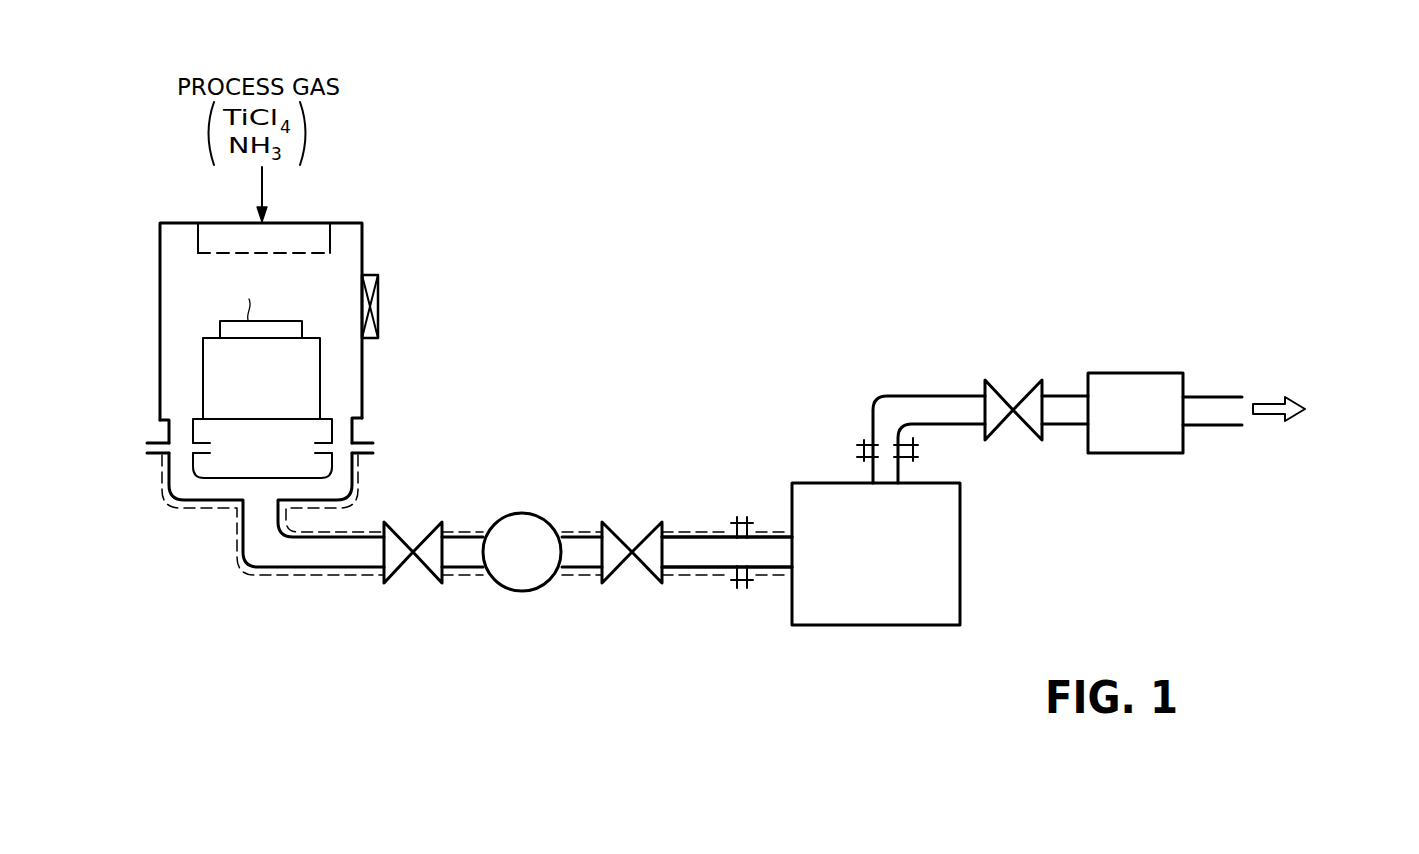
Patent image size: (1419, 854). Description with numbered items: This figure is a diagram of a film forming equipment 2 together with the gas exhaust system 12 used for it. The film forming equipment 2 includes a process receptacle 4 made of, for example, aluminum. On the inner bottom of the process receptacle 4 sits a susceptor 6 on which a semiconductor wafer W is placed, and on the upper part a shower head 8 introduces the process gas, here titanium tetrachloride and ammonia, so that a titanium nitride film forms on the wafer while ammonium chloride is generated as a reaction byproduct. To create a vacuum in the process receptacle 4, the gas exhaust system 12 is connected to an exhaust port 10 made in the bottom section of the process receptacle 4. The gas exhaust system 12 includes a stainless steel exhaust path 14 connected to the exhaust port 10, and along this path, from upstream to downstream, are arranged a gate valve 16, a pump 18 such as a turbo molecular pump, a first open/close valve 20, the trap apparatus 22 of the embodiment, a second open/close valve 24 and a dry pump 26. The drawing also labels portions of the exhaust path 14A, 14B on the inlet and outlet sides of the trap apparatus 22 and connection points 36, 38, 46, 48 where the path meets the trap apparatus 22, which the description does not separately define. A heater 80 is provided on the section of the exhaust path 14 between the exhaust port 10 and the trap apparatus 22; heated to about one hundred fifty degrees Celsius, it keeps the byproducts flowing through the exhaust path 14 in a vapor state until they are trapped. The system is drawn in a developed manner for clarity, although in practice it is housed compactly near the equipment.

The film forming equipment 2 is at (145, 358).
The process receptacle 4 is at (362, 250).
The susceptor 6 is at (313, 358).
The shower head 8 is at (313, 232).
The exhaust port 10 is at (178, 417).
The gas exhaust system 12 is at (410, 685).
The exhaust path 14 is at (273, 557).
The upstream exhaust pipe portion 14A is at (723, 586).
The downstream exhaust pipe portion 14B is at (858, 432).
The gate valve 16 is at (403, 538).
The pump 18 is at (535, 513).
The first open/close valve 20 is at (618, 532).
The trap apparatus 22 is at (867, 636).
The second open/close valve 24 is at (1000, 386).
The dry pump 26 is at (1138, 373).
The joint 36 is at (752, 596).
The joint 38 is at (772, 545).
The joint 46 is at (852, 462).
The joint 48 is at (903, 470).
The heater 80 is at (333, 590).